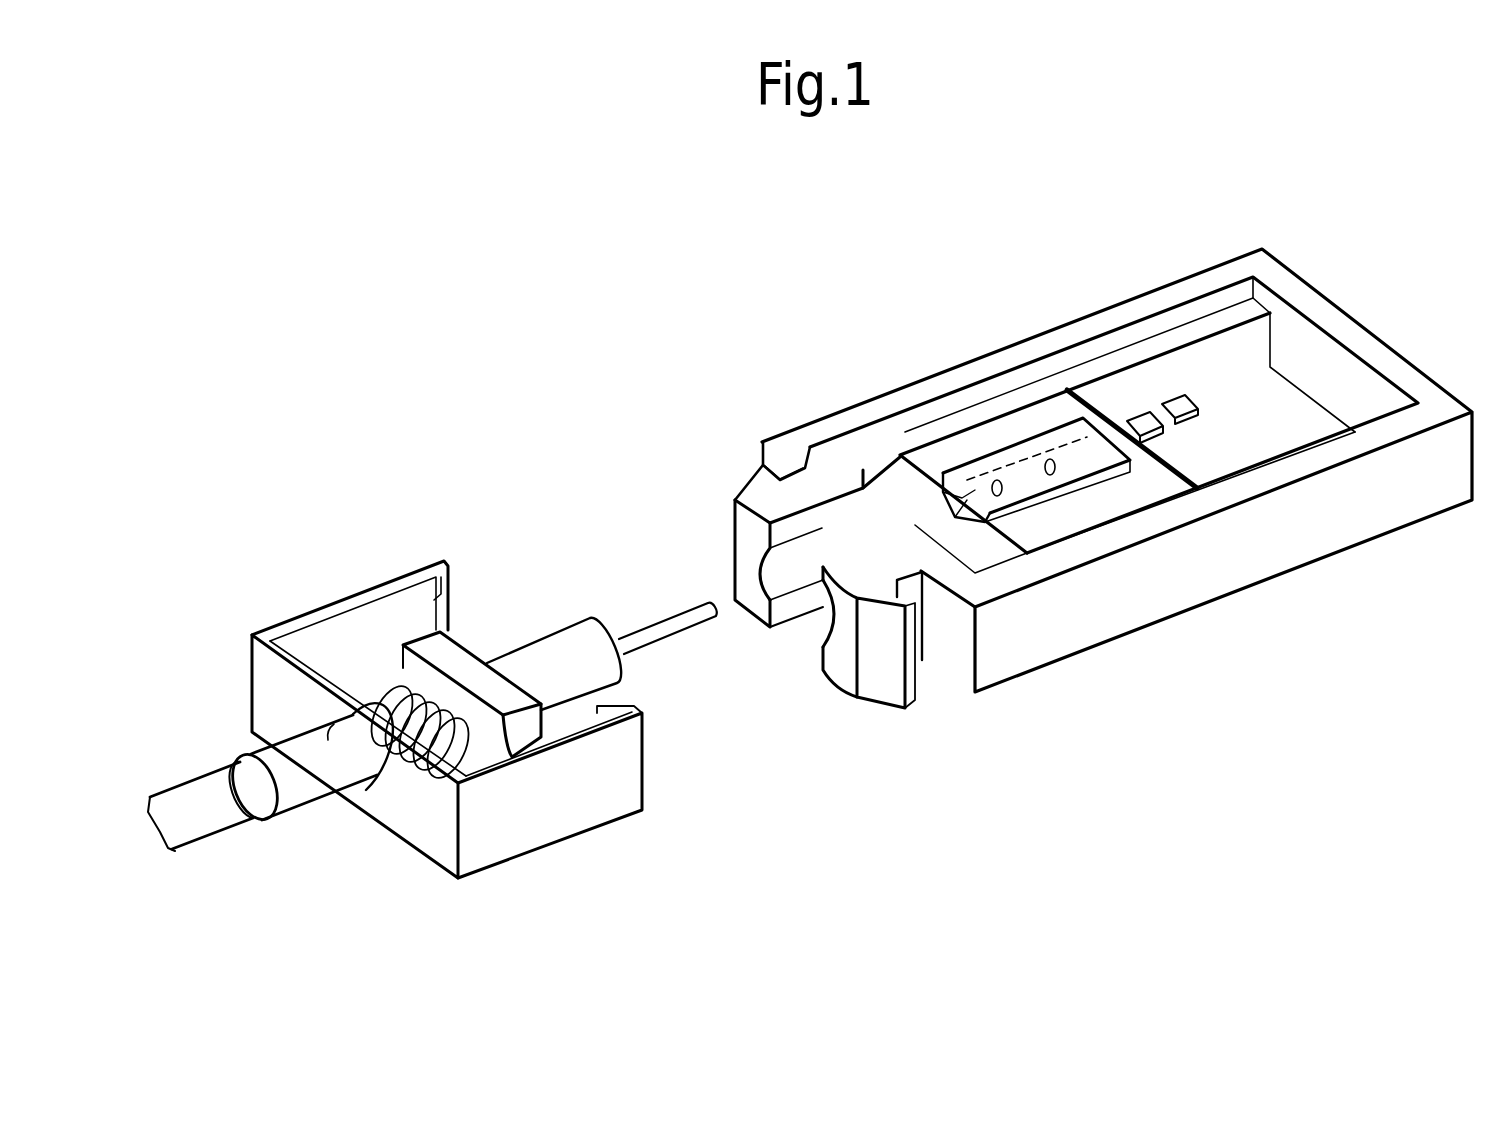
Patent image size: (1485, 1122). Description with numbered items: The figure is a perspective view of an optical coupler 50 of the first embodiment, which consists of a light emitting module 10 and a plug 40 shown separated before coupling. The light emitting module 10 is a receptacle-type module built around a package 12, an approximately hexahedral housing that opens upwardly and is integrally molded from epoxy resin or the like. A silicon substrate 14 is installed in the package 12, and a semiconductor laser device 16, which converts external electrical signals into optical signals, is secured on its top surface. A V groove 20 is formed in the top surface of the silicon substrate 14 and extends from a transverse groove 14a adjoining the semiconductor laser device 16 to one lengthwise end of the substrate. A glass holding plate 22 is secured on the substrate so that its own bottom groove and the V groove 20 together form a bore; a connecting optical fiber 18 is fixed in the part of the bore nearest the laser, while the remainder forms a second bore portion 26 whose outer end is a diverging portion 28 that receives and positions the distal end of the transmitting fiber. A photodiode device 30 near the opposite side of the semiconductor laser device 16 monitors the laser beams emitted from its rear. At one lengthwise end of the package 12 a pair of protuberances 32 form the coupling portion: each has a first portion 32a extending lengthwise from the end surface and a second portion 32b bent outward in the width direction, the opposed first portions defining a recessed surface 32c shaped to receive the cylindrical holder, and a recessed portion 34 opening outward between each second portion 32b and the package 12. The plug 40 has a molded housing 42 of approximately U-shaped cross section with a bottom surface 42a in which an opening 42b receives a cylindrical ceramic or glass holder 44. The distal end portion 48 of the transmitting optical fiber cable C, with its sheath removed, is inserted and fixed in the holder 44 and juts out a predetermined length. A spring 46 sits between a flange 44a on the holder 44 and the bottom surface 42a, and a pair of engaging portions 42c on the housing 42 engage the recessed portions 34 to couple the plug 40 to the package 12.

The light emitting module 10 is at (652, 465).
The package 12 is at (1343, 328).
The silicon substrate 14 is at (1226, 427).
The transverse groove 14a is at (1193, 478).
The semiconductor laser device 16 is at (1137, 422).
The connecting optical fiber 18 is at (1150, 465).
The V groove 20 is at (1025, 450).
The holding plate 22 is at (1044, 465).
The second bore portion 26 is at (1000, 486).
The diverging portion 28 is at (955, 480).
The photodiode device 30 is at (1178, 405).
The protuberance 32 is at (735, 368).
The first portion 32a is at (765, 466).
The second portion 32b is at (740, 475).
The recessed surface 32c is at (790, 585).
The recessed portion 34 is at (793, 480).
The plug 40 is at (458, 548).
The housing 42 is at (497, 843).
The bottom surface 42a is at (440, 843).
The opening 42b is at (343, 793).
The engaging portion 42c is at (450, 620).
The holder 44 is at (577, 648).
The flange 44a is at (530, 732).
The spring 46 is at (390, 697).
The distal end portion 48 is at (661, 620).
The optical coupler 50 is at (463, 448).
The transmitting optical fiber cable C is at (193, 797).